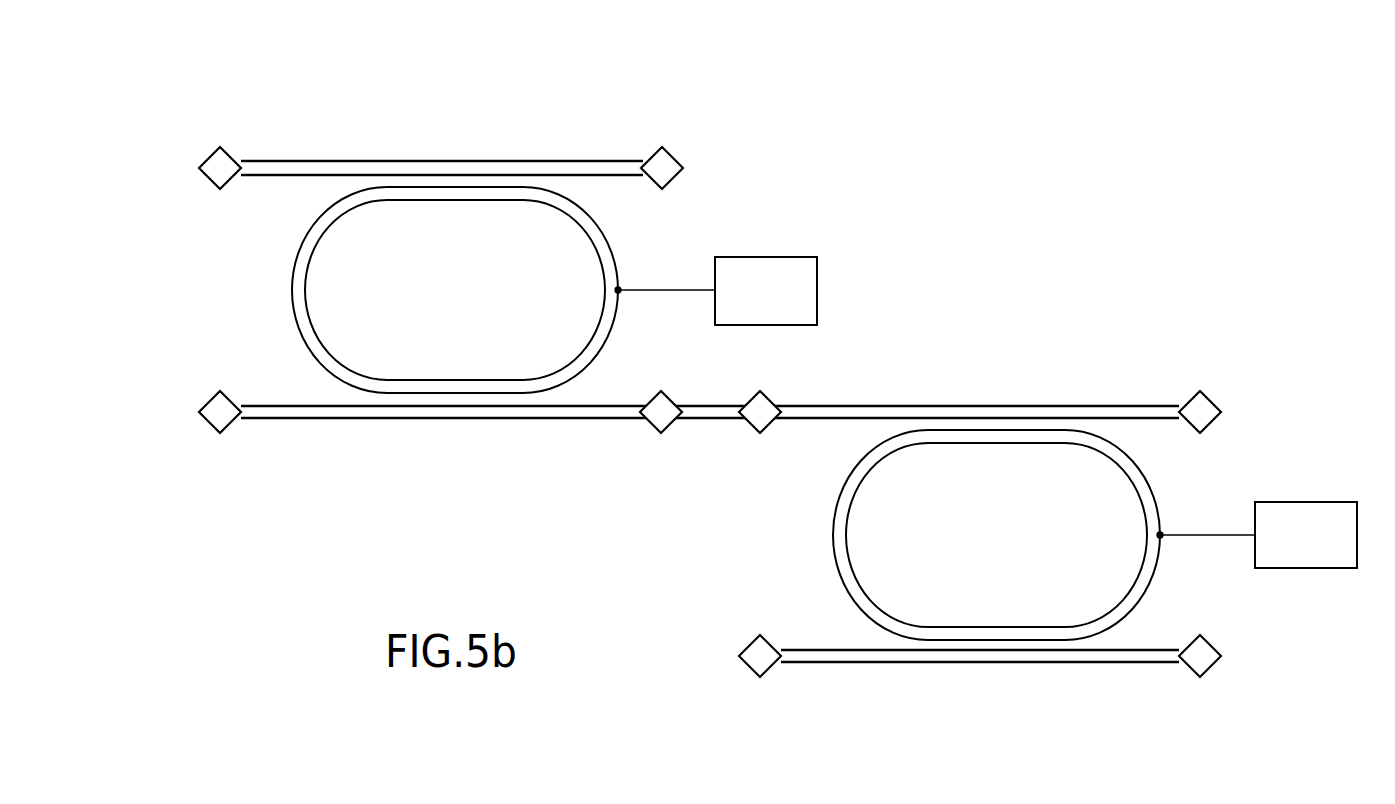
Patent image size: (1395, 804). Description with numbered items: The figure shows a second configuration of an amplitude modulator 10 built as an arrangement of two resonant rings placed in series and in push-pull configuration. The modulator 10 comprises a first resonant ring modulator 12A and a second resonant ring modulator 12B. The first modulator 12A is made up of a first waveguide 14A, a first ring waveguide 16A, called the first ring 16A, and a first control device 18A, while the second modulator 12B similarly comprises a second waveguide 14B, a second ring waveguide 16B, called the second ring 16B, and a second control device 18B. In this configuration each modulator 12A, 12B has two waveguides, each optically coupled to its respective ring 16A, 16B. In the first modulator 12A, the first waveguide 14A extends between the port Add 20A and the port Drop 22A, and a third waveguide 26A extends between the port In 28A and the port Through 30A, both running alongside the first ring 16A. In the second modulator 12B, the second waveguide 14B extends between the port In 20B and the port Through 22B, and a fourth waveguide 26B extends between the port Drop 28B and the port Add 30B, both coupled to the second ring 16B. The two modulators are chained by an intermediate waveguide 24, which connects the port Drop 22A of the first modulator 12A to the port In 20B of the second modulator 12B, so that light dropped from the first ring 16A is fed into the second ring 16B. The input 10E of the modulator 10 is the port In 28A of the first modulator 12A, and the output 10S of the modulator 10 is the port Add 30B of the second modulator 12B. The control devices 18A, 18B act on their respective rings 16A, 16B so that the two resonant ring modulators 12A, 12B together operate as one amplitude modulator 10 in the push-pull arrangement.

The modulator 10 is at (855, 205).
The output 10S is at (667, 178).
The input 10E is at (750, 650).
The first resonant ring modulator 12A is at (1228, 462).
The second resonant ring modulator 12B is at (258, 286).
The first waveguide 14A is at (945, 406).
The second waveguide 14B is at (426, 419).
The first ring waveguide 16A is at (1042, 440).
The second ring waveguide 16B is at (470, 192).
The first control device 18A is at (1257, 535).
The second control device 18B is at (716, 291).
The port Add 20A is at (1208, 403).
The port In 20B is at (666, 426).
The port Drop 22A is at (766, 426).
The port Through 22B is at (228, 426).
The intermediate waveguide 24 is at (714, 419).
The third waveguide 26A is at (1000, 663).
The fourth waveguide 26B is at (343, 160).
The port In 28A is at (757, 665).
The port Drop 28B is at (663, 170).
The port Through 30A is at (1205, 661).
The port Add 30B is at (213, 162).